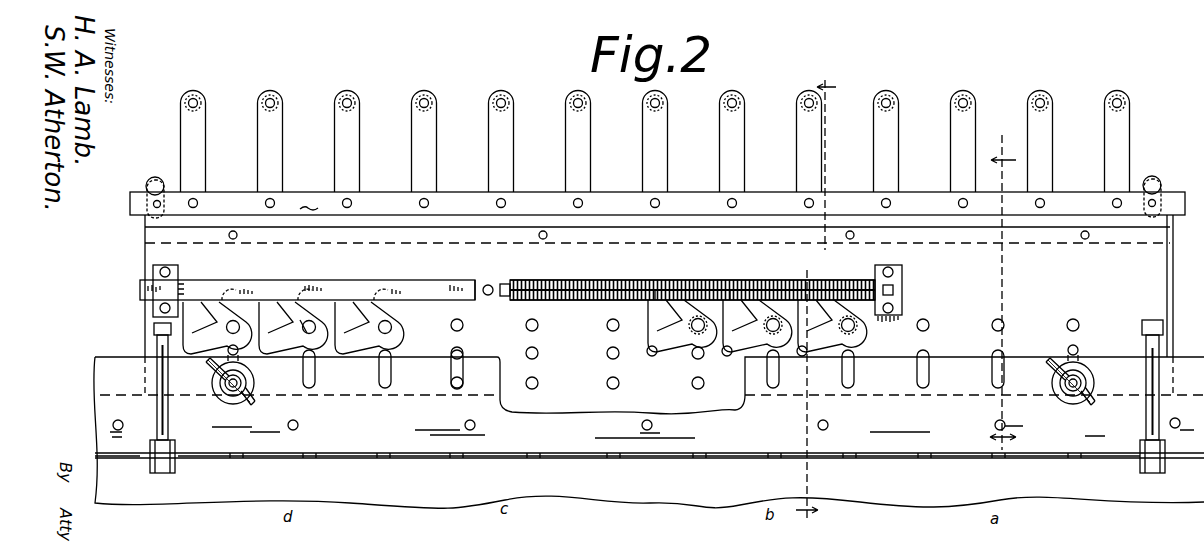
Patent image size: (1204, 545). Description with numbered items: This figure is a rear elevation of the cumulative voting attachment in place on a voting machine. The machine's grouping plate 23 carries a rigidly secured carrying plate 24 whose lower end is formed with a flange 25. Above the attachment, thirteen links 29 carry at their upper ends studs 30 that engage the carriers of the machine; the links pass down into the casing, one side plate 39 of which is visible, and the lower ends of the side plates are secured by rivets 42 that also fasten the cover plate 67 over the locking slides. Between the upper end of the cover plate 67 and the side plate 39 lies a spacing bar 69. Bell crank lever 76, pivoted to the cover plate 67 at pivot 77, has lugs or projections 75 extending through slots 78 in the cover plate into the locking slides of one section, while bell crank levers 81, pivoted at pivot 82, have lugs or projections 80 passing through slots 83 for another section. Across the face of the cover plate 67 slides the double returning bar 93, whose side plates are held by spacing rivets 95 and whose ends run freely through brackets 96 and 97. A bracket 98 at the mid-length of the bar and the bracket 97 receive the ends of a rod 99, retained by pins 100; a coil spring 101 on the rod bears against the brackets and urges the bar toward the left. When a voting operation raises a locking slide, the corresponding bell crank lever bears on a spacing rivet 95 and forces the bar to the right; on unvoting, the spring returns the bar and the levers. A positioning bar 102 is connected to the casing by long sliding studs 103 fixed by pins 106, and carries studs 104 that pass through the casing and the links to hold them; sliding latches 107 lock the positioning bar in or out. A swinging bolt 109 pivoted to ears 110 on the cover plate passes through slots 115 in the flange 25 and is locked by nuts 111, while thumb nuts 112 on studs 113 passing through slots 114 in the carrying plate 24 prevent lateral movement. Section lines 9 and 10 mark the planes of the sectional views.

The section line 9— 9 is at (816, 299).
The section line 10— 10 is at (1003, 287).
The grouping plate 23 is at (649, 432).
The carrying plate 24 is at (649, 397).
The flange 25 is at (352, 461).
The links 29 is at (489, 150).
The studs 30 is at (414, 100).
The side plate 39 is at (307, 202).
The rivets 42 is at (606, 383).
The cover plate 67 is at (659, 310).
The spacing bar 69 is at (145, 238).
The lugs or projections 75 is at (648, 353).
The bell crank lever 76 is at (757, 326).
The pivot 77 is at (700, 318).
The slots 78 is at (684, 318).
The lugs or projections 80 is at (195, 356).
The bell crank levers 81 is at (293, 328).
The pivot 82 is at (414, 317).
The slots 83 is at (268, 300).
The double returning bar 93 is at (307, 290).
The spacing rivets 95 is at (236, 286).
The bracket 96 is at (180, 272).
The bracket 97 is at (893, 269).
The bracket 98 is at (512, 281).
The rod 99 is at (488, 300).
The pins 100 is at (488, 281).
The coil spring 101 is at (620, 281).
The positioning bar 102 is at (657, 203).
The sliding studs 103 is at (152, 204).
The studs 104 is at (575, 203).
The pins 106 is at (146, 185).
The sliding latches 107 is at (162, 170).
The swinging bolt 109 is at (157, 405).
The ears 110 is at (154, 330).
The nuts 111 is at (152, 462).
The thumb nuts 112 is at (248, 406).
The studs 113 is at (222, 394).
The slots 114 is at (316, 376).
The slots 115 is at (233, 459).